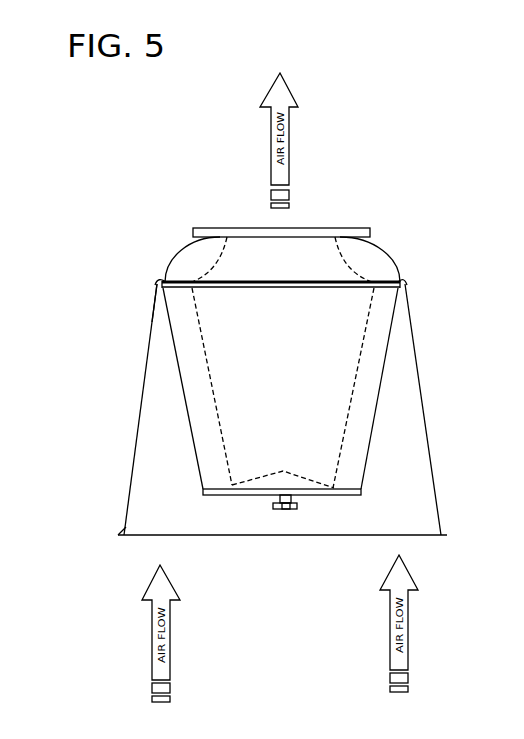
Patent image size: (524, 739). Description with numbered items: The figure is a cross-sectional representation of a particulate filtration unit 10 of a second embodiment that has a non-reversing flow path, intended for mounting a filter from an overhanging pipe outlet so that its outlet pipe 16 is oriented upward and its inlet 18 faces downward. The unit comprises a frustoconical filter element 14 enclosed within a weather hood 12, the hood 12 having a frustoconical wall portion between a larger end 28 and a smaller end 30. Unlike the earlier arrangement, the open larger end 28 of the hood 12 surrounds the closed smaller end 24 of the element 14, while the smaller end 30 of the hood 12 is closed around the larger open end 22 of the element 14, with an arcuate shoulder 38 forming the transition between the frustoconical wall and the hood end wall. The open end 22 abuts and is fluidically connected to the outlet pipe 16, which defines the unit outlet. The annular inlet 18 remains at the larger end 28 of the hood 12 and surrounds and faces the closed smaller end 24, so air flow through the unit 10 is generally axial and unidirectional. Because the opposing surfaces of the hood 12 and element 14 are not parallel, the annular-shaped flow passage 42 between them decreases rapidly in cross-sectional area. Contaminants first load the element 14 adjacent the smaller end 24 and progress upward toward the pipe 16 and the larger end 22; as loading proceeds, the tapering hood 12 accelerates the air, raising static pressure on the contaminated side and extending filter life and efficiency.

The filtration unit 10 is at (74, 229).
The weather hood 12 is at (140, 405).
The filter element 14 is at (365, 404).
The outlet pipe 16 is at (311, 263).
The inlet 18 is at (233, 537).
The open end 22 is at (387, 300).
The smaller end 24 is at (353, 482).
The larger end 28 is at (127, 520).
The smaller end 30 is at (150, 318).
The arcuate shoulder 38 is at (153, 286).
The annular-shaped flow passage 42 is at (400, 424).